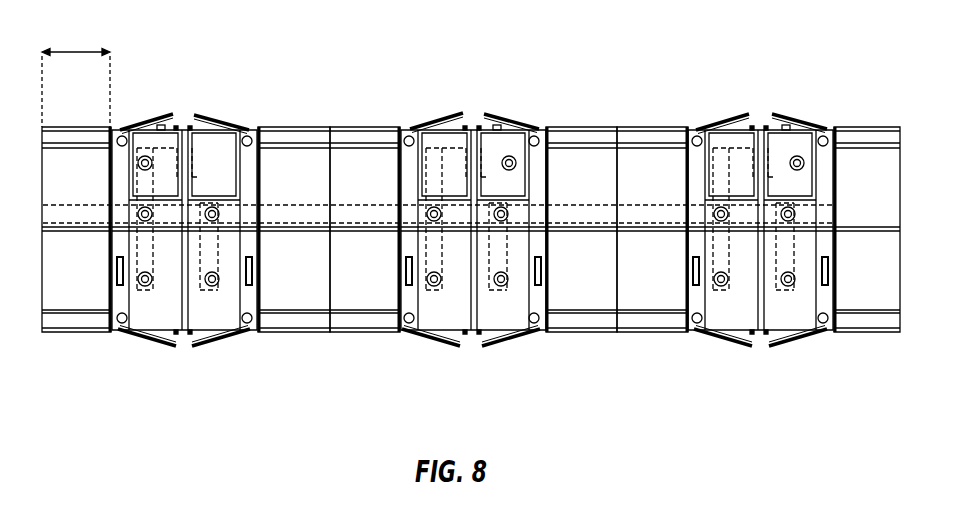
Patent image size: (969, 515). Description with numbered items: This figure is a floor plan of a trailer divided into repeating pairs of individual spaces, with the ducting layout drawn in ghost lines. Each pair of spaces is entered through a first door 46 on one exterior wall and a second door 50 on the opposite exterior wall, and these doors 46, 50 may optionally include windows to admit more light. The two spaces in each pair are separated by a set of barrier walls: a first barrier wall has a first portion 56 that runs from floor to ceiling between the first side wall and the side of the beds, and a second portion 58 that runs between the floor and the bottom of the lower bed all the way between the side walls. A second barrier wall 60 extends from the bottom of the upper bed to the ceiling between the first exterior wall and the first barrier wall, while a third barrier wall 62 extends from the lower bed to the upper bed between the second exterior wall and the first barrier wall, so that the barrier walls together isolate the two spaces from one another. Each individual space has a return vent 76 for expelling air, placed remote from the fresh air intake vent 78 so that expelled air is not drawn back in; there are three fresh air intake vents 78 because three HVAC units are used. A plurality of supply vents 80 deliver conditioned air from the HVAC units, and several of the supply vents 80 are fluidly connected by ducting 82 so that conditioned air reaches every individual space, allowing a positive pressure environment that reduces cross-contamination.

The first door 46 is at (160, 120).
The second door 50 is at (157, 343).
The first portion of the first barrier wall 56 is at (136, 220).
The second portion of the first barrier wall 58 is at (103, 227).
The second barrier wall 60 is at (108, 175).
The third barrier wall 62 is at (110, 270).
The return vent 76 is at (118, 133).
The fresh air intake vent 78 is at (159, 126).
The supply vent 80 is at (138, 158).
The ducting 82 is at (315, 203).